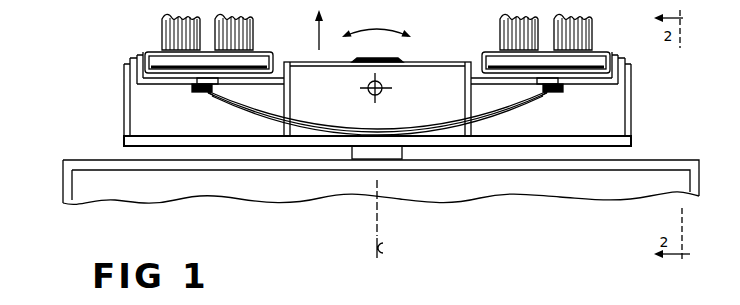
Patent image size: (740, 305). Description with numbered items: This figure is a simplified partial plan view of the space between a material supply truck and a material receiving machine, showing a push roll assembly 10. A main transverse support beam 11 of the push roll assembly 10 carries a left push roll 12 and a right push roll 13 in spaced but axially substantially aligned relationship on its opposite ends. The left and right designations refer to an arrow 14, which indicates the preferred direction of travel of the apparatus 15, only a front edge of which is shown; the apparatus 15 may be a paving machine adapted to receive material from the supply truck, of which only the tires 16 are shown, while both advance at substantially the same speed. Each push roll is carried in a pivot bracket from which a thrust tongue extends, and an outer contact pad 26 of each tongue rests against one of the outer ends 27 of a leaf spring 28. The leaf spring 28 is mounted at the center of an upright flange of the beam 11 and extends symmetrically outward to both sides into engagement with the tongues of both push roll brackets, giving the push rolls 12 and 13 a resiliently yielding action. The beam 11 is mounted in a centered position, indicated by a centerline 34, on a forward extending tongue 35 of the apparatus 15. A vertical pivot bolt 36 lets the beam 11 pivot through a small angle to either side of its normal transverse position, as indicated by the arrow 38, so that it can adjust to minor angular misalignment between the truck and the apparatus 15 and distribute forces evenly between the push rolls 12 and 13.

The push roll assembly 10 is at (425, 50).
The main transverse support beam 11 is at (432, 62).
The left push roll 12 is at (155, 50).
The right push roll 13 is at (597, 49).
The arrow 14 is at (319, 40).
The apparatus 15 is at (86, 148).
The tires 16 is at (255, 36).
The outer contact pad 26 is at (192, 88).
The outer ends 27 is at (210, 96).
The leaf spring 28 is at (405, 122).
The centerline 34 is at (377, 212).
The forward extending tongue 35 is at (388, 57).
The vertical pivot bolt 36 is at (363, 96).
The arrow 38 is at (372, 28).